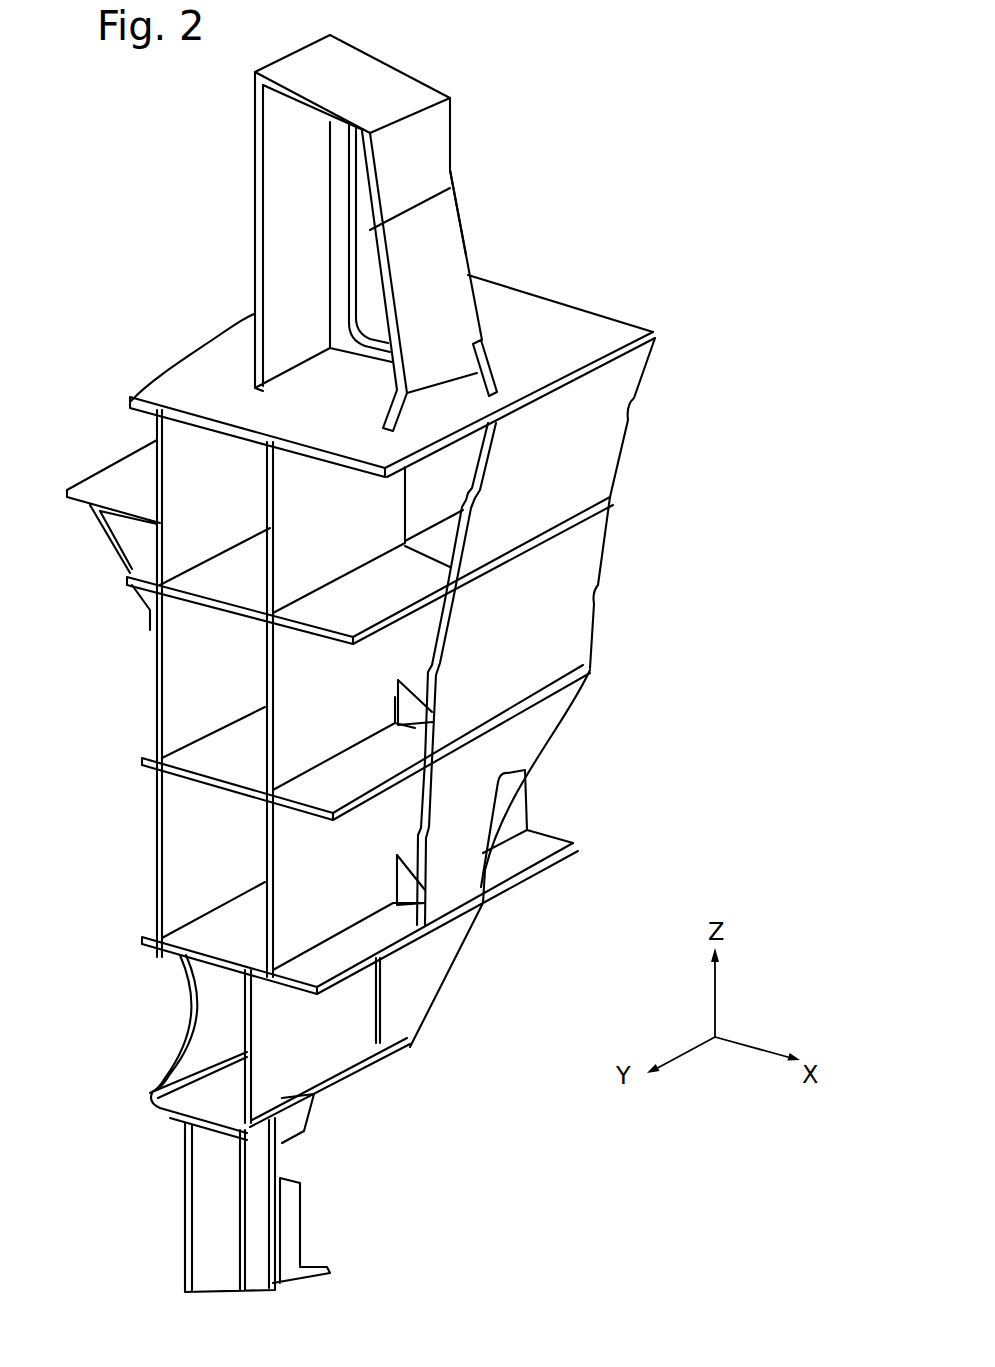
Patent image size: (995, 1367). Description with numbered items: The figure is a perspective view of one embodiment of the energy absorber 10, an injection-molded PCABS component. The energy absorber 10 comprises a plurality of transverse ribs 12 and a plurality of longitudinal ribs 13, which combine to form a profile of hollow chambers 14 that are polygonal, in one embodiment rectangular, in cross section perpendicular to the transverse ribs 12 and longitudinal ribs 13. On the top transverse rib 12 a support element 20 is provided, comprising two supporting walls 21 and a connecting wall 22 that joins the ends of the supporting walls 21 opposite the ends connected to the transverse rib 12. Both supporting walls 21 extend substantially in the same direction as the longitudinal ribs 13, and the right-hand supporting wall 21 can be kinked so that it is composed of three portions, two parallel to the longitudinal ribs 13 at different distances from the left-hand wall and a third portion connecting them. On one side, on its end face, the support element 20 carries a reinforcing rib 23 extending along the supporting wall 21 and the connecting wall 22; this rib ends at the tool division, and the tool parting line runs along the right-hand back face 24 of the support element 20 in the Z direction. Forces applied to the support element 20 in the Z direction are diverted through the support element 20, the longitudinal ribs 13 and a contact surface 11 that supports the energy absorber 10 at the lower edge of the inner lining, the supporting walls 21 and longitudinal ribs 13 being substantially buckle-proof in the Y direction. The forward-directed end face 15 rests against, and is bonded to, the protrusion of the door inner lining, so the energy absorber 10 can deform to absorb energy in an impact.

The energy absorber 10 is at (645, 747).
The contact surface 11 is at (307, 1283).
The transverse ribs 12 is at (622, 327).
The longitudinal ribs 13 is at (270, 645).
The hollow chambers 14 is at (173, 785).
The end face 15 is at (549, 633).
The support element 20 is at (476, 145).
The supporting walls 21 is at (277, 247).
The connecting wall 22 is at (382, 85).
The reinforcing rib 23 is at (338, 167).
The back face 24 is at (453, 168).